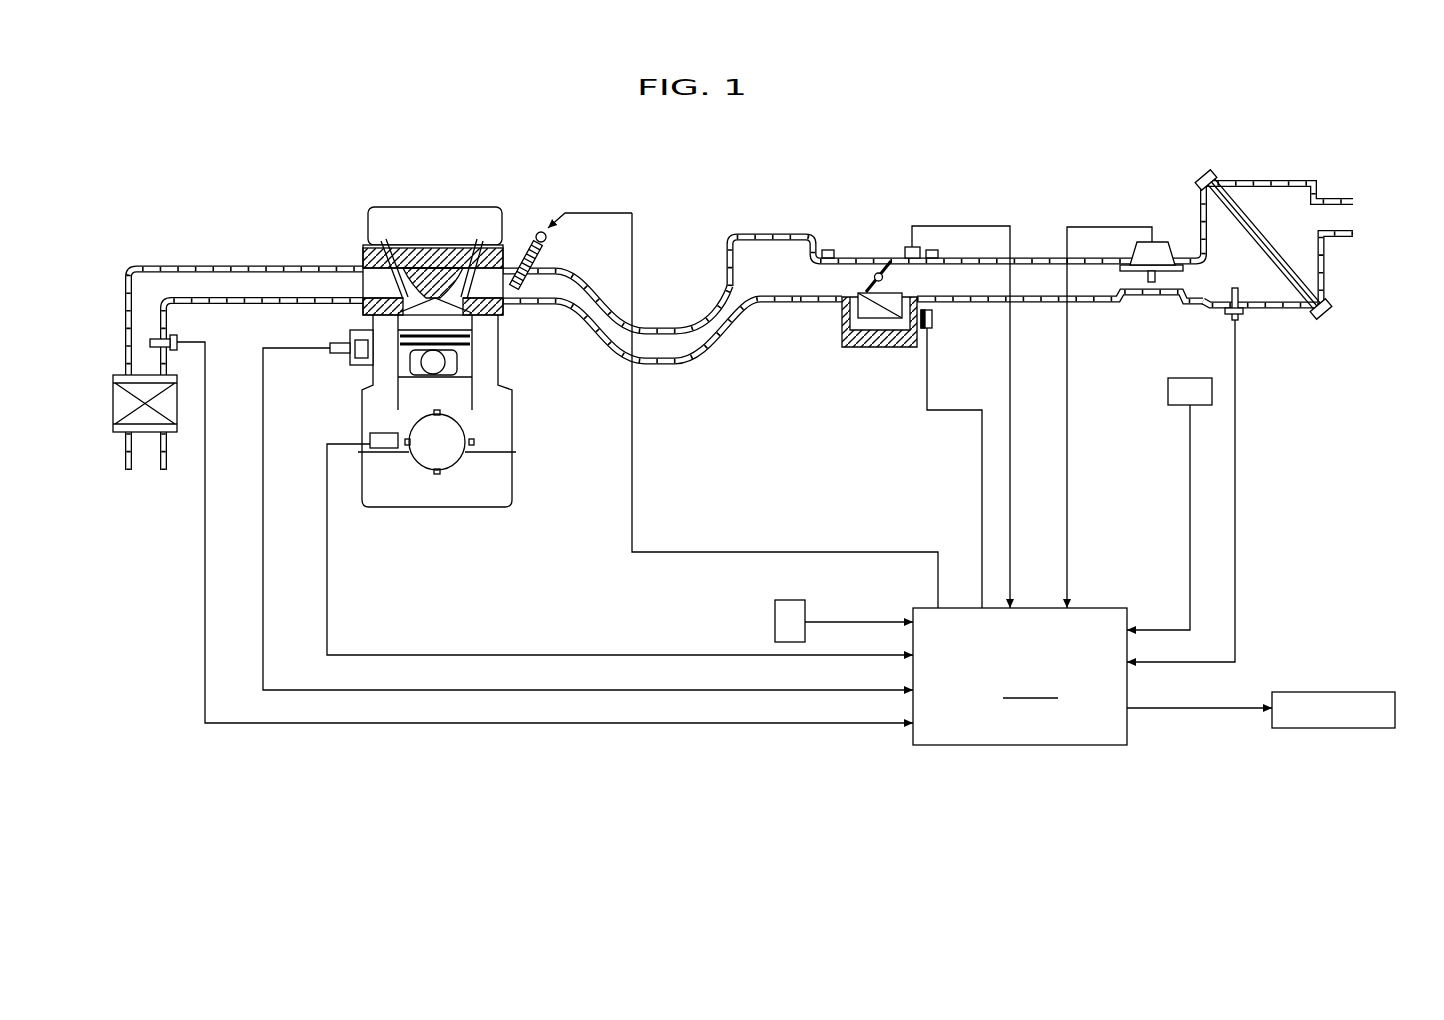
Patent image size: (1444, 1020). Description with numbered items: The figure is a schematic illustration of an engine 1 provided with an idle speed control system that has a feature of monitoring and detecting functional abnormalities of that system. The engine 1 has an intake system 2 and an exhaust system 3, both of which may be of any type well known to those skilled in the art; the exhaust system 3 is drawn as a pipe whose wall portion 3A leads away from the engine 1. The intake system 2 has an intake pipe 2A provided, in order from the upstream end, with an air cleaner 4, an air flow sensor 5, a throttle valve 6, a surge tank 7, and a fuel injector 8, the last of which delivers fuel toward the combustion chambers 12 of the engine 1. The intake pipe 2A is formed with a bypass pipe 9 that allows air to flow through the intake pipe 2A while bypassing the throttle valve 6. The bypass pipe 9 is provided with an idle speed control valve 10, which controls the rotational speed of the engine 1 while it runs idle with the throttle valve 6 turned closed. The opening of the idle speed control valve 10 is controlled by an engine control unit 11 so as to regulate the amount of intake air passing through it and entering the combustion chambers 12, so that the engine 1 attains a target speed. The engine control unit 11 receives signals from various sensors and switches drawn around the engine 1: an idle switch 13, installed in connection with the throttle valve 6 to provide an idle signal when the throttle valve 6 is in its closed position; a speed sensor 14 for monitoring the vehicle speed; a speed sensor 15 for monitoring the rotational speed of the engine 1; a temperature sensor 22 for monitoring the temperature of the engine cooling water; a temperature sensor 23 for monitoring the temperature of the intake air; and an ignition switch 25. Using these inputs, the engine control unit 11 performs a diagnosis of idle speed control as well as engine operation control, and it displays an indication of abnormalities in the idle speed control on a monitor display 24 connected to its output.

The engine 1 is at (446, 357).
The intake system 2 is at (853, 293).
The intake pipe 2A is at (728, 350).
The exhaust system 3 is at (238, 326).
The exhaust passage 3A is at (263, 265).
The air cleaner 4 is at (1283, 182).
The air flow sensor 5 is at (1170, 242).
The throttle valve 6 is at (883, 262).
The surge tank 7 is at (750, 232).
The fuel injector 8 is at (547, 240).
The bypass pipe 9 is at (887, 323).
The idle speed control valve 10 is at (930, 334).
The engine control unit (ECU) 11 is at (1112, 608).
The combustion chambers 12 is at (435, 308).
The idle switch 13 is at (910, 246).
The speed sensor 14 is at (775, 608).
The speed sensor 15 is at (366, 436).
The temperature sensor 22 is at (340, 353).
The temperature sensor 23 is at (1245, 313).
The monitor display 24 is at (1385, 692).
The ignition switch 25 is at (1168, 388).